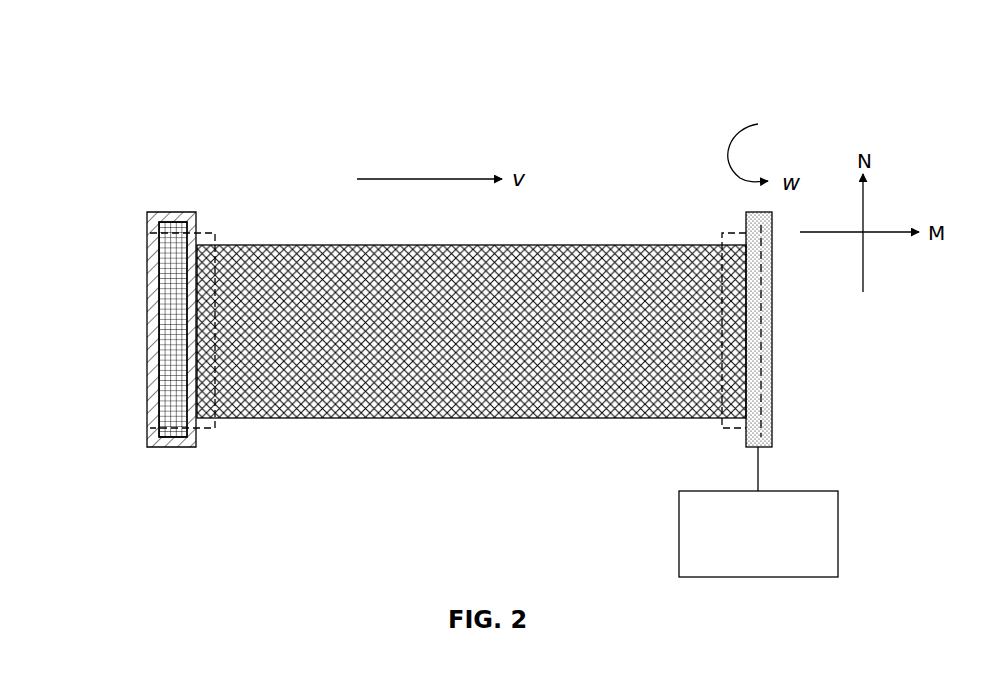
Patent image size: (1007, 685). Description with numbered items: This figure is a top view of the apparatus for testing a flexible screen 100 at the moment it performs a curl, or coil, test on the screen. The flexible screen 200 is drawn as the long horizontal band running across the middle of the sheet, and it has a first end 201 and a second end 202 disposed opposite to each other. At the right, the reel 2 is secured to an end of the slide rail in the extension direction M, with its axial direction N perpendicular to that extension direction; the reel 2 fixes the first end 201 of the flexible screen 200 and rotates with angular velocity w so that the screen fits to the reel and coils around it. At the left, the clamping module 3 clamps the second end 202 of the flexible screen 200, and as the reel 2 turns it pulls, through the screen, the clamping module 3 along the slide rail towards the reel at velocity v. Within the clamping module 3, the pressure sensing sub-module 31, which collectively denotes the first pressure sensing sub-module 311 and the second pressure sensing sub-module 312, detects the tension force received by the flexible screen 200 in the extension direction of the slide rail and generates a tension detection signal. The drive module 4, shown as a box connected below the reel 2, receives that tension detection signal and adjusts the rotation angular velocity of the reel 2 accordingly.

The apparatus for testing a flexible screen 100 is at (350, 90).
The flexible screen 200 is at (437, 414).
The first end 201 is at (733, 428).
The second end 202 is at (208, 426).
The reel 2 is at (772, 357).
The clamping module 3 is at (160, 213).
The pressure sensing sub-module 31 is at (163, 295).
The first pressure sensing sub-module 311 is at (173, 329).
The second pressure sensing sub-module 312 is at (173, 329).
The drive module 4 is at (795, 491).